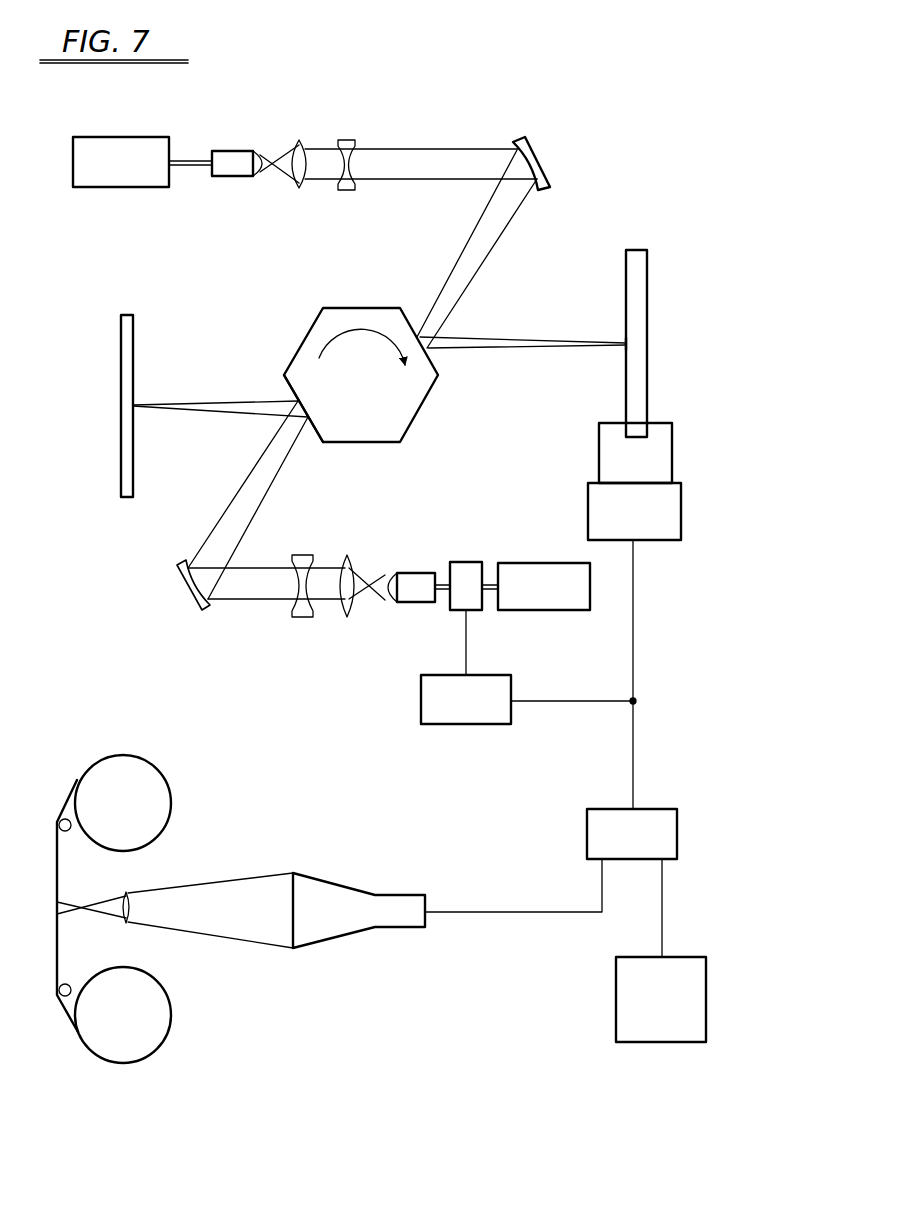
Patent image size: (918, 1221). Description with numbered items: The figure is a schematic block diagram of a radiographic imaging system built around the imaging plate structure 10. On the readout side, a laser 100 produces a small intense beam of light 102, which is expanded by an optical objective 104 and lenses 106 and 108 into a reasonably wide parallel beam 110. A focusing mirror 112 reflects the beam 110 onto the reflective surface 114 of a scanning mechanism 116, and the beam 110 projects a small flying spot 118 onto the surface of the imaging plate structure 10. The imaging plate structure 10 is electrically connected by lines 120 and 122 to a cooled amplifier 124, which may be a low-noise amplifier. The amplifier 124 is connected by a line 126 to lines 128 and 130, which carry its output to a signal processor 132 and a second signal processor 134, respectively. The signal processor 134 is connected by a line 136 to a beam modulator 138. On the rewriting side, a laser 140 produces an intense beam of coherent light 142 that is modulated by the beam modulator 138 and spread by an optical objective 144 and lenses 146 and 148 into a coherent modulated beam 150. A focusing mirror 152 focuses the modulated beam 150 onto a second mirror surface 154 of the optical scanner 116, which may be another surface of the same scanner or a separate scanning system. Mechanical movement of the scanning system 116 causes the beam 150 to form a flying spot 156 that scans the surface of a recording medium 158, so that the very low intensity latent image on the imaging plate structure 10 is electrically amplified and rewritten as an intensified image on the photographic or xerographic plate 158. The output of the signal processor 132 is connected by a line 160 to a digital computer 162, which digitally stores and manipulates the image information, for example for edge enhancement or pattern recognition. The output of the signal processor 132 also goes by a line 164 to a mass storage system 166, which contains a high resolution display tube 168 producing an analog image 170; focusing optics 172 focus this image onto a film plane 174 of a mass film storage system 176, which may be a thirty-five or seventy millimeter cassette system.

The imaging plate structure 10 is at (650, 290).
The laser 100 is at (128, 133).
The beam of light 102 is at (187, 170).
The optical objective 104 is at (246, 149).
The lens 106 is at (304, 139).
The lens 108 is at (354, 192).
The parallel beam 110 is at (425, 148).
The focusing mirror 112 is at (546, 151).
The reflective surface 114 is at (418, 317).
The scanning mechanism 116 is at (361, 306).
The flying spot 118 is at (623, 349).
The line 120 is at (636, 475).
The line 122 is at (673, 430).
The cooled amplifier 124 is at (666, 510).
The line 126 is at (636, 640).
The line 128 is at (636, 755).
The line 130 is at (603, 703).
The signal processor 132 is at (597, 832).
The second signal processor 134 is at (452, 718).
The line 136 is at (463, 640).
The beam modulator 138 is at (456, 565).
The laser 140 is at (528, 612).
The beam of coherent light 142 is at (491, 579).
The optical objective 144 is at (428, 572).
The lens 146 is at (346, 619).
The lens 148 is at (303, 556).
The coherent modulated beam 150 is at (266, 591).
The focusing mirror 152 is at (177, 585).
The second mirror surface 154 is at (308, 437).
The flying spot 156 is at (138, 398).
The recording medium 158 is at (122, 320).
The line 160 is at (666, 920).
The digital computer 162 is at (619, 1003).
The line 164 is at (569, 910).
The mass storage system 166 is at (373, 908).
The high resolution display tube 168 is at (328, 893).
The analog image 170 is at (220, 901).
The focusing optics 172 is at (134, 892).
The film plane 174 is at (62, 921).
The mass film storage system 176 is at (158, 761).